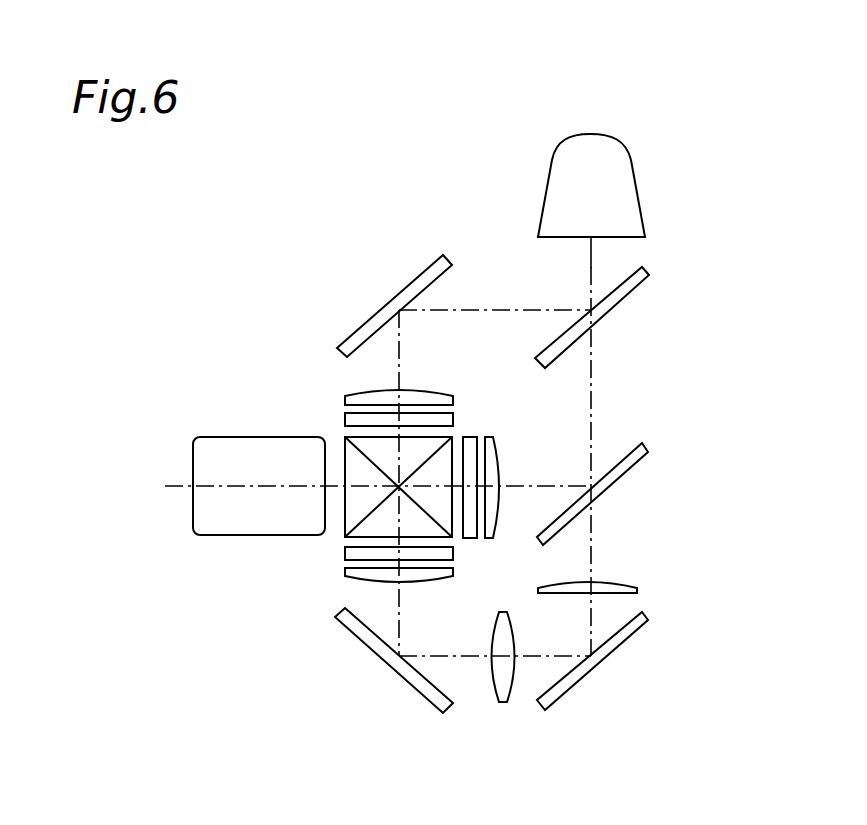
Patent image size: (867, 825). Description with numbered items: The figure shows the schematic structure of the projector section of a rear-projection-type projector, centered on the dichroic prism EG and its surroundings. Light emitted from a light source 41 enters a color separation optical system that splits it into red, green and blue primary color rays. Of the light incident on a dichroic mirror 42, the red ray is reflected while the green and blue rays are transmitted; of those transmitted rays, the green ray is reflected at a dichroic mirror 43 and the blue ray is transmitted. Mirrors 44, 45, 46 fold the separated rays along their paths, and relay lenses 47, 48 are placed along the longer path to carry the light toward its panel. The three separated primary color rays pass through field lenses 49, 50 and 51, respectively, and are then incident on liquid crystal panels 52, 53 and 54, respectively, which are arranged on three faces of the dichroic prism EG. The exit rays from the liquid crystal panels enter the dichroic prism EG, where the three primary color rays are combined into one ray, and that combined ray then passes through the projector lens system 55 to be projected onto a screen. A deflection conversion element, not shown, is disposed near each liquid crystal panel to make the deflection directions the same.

The light source 41 is at (617, 172).
The dichroic mirror 42 is at (607, 305).
The dichroic mirror 43 is at (603, 485).
The mirror 44 is at (402, 298).
The mirror 45 is at (605, 648).
The mirror 46 is at (388, 657).
The relay lens 47 is at (602, 585).
The relay lens 48 is at (502, 665).
The field lens 49 is at (407, 398).
The field lens 50 is at (490, 455).
The field lens 51 is at (405, 575).
The liquid crystal panel 52 is at (350, 420).
The liquid crystal panel 53 is at (470, 442).
The liquid crystal panel 54 is at (447, 553).
The projector lens system 55 is at (259, 450).
The dichroic prism EG is at (368, 502).